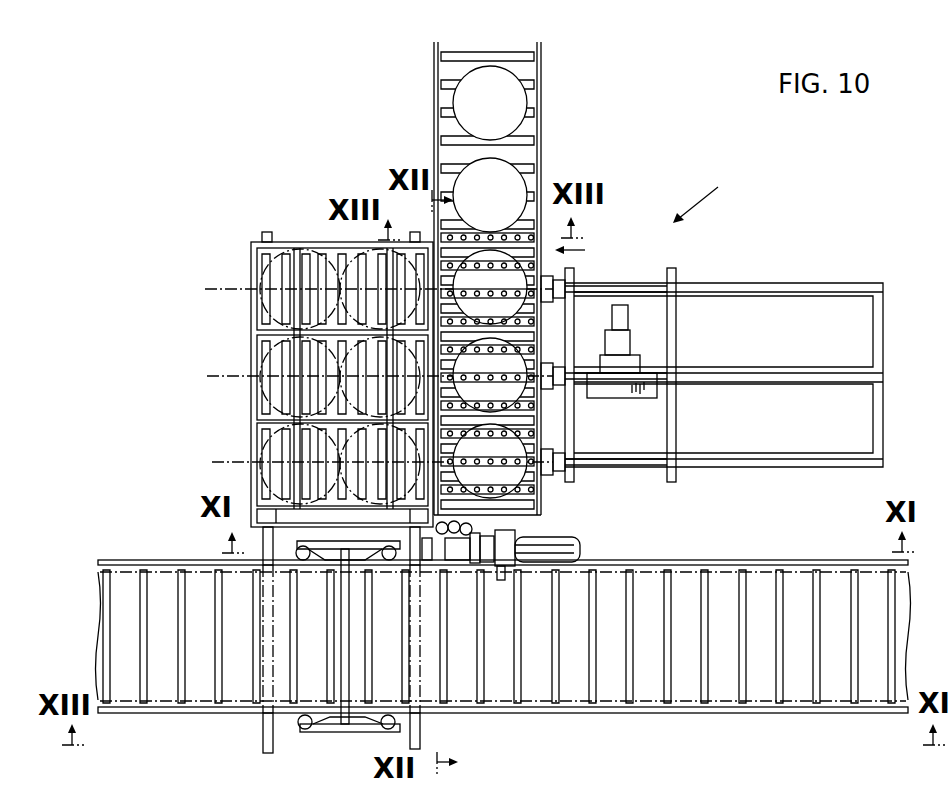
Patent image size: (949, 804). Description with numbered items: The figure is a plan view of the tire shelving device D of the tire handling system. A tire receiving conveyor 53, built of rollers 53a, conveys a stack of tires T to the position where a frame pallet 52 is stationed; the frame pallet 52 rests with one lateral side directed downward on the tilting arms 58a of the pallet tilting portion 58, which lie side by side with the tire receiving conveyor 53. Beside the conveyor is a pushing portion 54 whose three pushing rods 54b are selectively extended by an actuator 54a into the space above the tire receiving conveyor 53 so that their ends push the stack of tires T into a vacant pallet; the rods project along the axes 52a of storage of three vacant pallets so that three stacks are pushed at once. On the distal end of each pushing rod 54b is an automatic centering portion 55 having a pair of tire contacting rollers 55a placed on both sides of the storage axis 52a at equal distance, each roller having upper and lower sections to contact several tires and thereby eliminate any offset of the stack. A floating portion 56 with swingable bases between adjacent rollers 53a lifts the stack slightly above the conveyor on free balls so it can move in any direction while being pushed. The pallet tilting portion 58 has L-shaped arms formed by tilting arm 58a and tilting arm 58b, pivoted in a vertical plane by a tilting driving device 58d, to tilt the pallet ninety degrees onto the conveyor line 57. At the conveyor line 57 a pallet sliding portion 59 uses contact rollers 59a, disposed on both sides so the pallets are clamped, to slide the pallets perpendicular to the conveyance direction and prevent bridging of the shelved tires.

The frame pallet 52 is at (302, 375).
The axis of storage 52a is at (228, 376).
The tire receiving conveyor 53 is at (387, 287).
The rollers 53a is at (443, 108).
The pushing portion 54 is at (712, 362).
The actuator 54a is at (633, 342).
The pushing rods 54b is at (790, 293).
The automatic centering portion 55 is at (631, 372).
The tire contacting rollers 55a is at (553, 300).
The floating portion 56 is at (541, 247).
The conveyor line 57 is at (770, 560).
The pallet tilting portion 58 is at (561, 543).
The tilting arms 58a is at (416, 232).
The tilting arm 58b is at (268, 740).
The tilting driving device 58d is at (565, 553).
The pallet sliding portion 59 is at (319, 647).
The contact rollers 59a is at (290, 582).
The shelving device D is at (746, 188).
The tires T is at (528, 102).